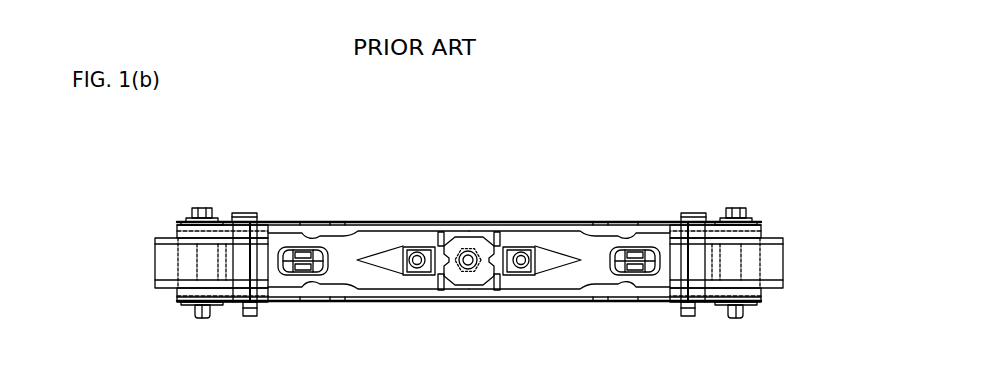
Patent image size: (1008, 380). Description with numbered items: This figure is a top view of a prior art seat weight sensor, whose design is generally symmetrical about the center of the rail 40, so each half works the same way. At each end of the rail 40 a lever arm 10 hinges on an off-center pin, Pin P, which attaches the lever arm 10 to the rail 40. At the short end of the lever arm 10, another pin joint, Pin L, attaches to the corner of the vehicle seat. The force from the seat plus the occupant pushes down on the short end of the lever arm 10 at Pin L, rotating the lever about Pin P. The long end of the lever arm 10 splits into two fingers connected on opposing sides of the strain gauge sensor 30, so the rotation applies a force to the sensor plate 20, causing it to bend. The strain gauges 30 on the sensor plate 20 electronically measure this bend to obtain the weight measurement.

The lever arm 10 is at (215, 262).
The sensor plate 20 is at (467, 250).
The strain gauges 30 is at (405, 252).
The rail 40 is at (565, 220).
The pin L Pin L is at (200, 303).
The pin P Pin P is at (247, 215).